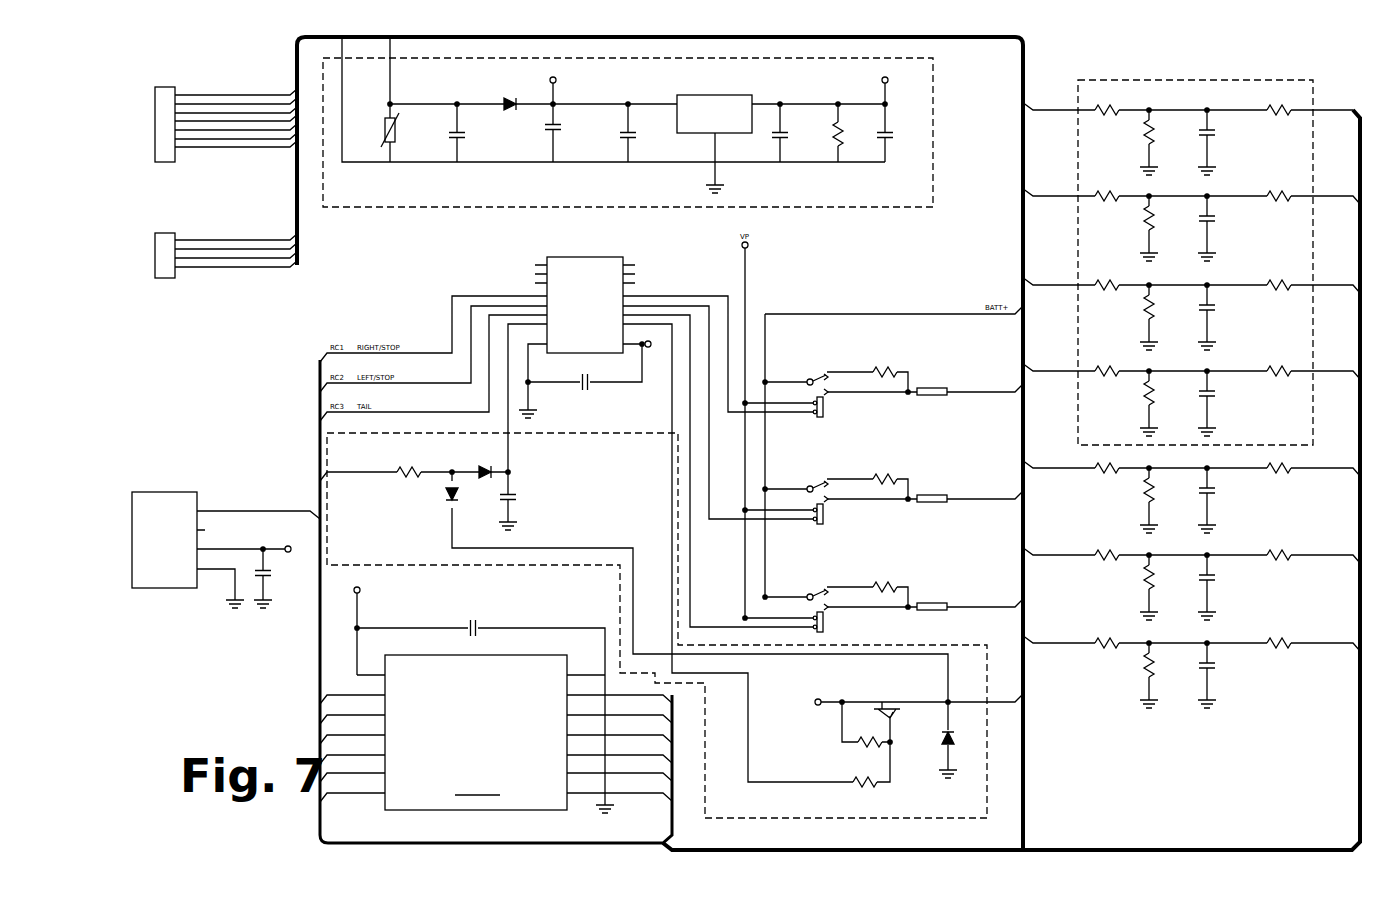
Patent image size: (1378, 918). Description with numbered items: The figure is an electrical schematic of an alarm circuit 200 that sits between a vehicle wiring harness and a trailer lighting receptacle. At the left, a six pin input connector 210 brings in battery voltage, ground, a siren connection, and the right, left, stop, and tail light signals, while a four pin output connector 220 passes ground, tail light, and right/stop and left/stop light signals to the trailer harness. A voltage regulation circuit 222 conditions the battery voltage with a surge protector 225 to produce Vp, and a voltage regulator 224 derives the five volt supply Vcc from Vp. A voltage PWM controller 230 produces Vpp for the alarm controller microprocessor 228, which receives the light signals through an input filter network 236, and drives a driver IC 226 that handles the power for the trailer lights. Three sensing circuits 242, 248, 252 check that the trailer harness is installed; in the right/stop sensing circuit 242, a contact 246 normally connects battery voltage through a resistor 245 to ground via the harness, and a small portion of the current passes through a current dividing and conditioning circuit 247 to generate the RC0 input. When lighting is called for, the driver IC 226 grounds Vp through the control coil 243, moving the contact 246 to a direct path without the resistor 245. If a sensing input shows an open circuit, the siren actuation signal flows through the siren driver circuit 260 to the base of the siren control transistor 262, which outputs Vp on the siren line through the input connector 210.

The alarm circuit 200 is at (1110, 63).
The input connector 210 is at (156, 106).
The output connector 220 is at (155, 258).
The voltage regulation circuit 222 is at (667, 145).
The voltage regulator 224 is at (717, 112).
The surge protector 225 is at (386, 131).
The driver IC 226 is at (574, 278).
The alarm controller microprocessor 228 is at (496, 701).
The voltage PWM controller 230 is at (152, 510).
The input filter network 236 is at (1256, 80).
The sensing circuit 242 is at (893, 390).
The control coil 243 is at (819, 431).
The resistor 245 is at (870, 353).
The contact 246 is at (800, 366).
The current dividing and conditioning circuit 247 is at (1191, 581).
The sensing circuit 248 is at (893, 495).
The sensing circuit 252 is at (893, 594).
The siren driver circuit 260 is at (693, 628).
The siren control transistor 262 is at (892, 700).